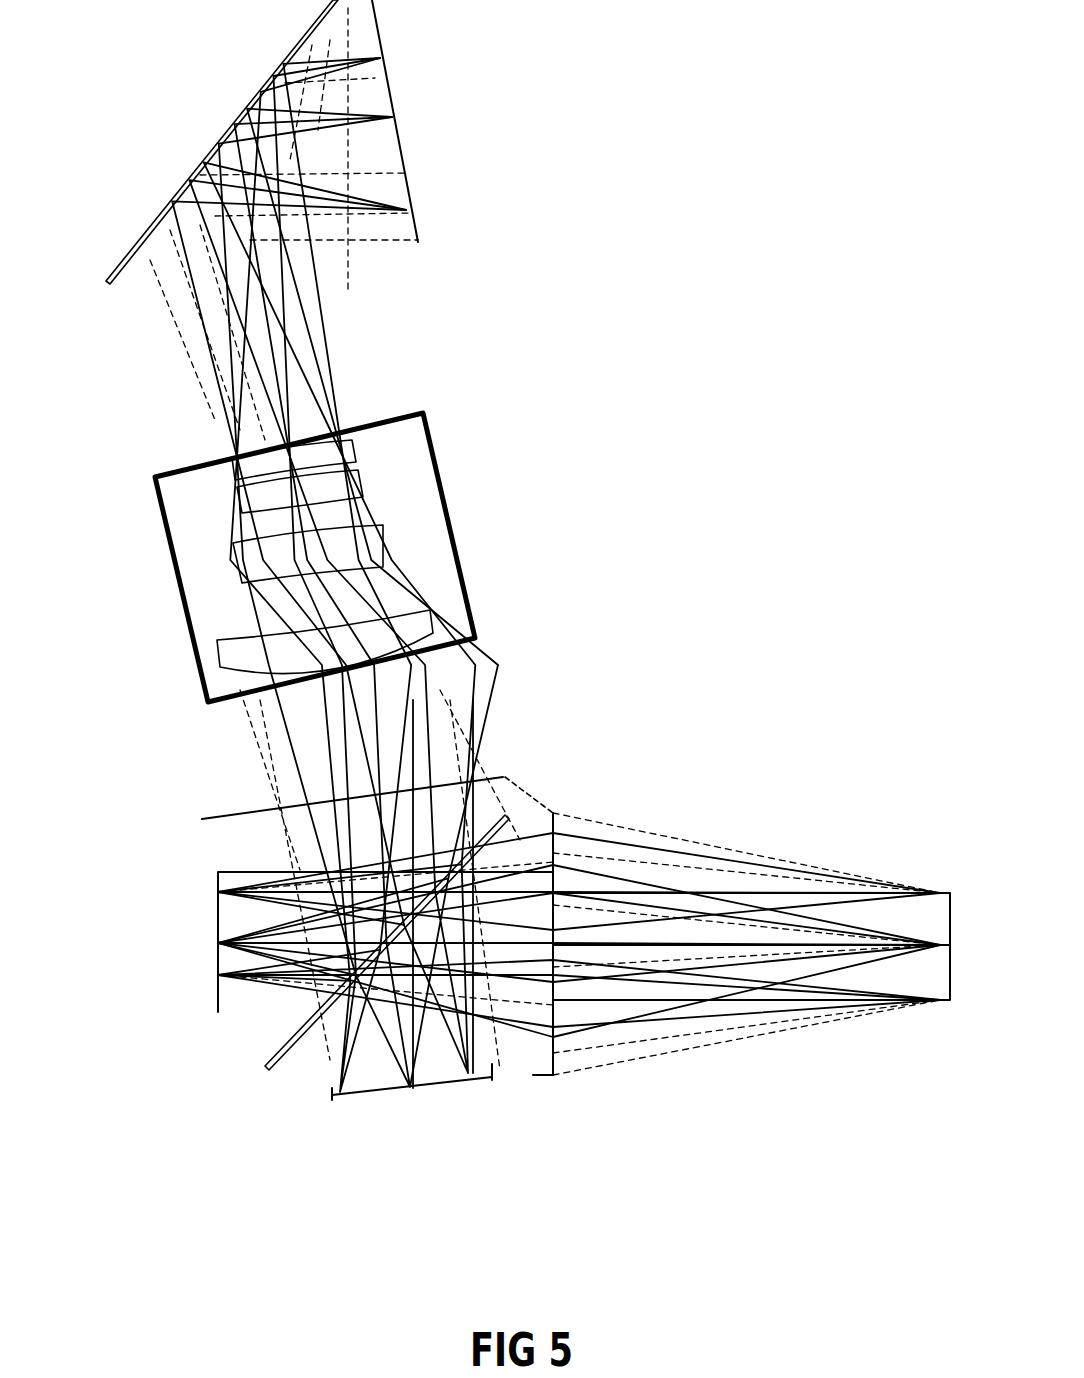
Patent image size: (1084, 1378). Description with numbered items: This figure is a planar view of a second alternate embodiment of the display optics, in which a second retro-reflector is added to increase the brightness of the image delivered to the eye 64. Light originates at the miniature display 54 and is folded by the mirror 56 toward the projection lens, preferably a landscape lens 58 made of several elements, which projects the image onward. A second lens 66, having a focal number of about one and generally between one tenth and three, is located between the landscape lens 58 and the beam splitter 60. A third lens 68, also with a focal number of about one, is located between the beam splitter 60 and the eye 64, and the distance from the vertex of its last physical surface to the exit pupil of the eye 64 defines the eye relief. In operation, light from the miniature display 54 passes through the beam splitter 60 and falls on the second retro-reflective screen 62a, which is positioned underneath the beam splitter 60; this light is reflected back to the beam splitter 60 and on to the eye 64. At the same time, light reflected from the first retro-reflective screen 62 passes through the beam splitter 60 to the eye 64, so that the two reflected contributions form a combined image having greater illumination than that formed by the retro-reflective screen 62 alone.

The miniature display 54 is at (426, 113).
The mirror 56 is at (165, 187).
The landscape lens 58 is at (479, 493).
The beam splitter 60 is at (376, 883).
The retro-reflective screen 62 is at (224, 1014).
The second retro-reflective screen 62a is at (352, 1104).
The eye 64 is at (905, 844).
The second lens 66 is at (523, 756).
The third lens 68 is at (564, 786).